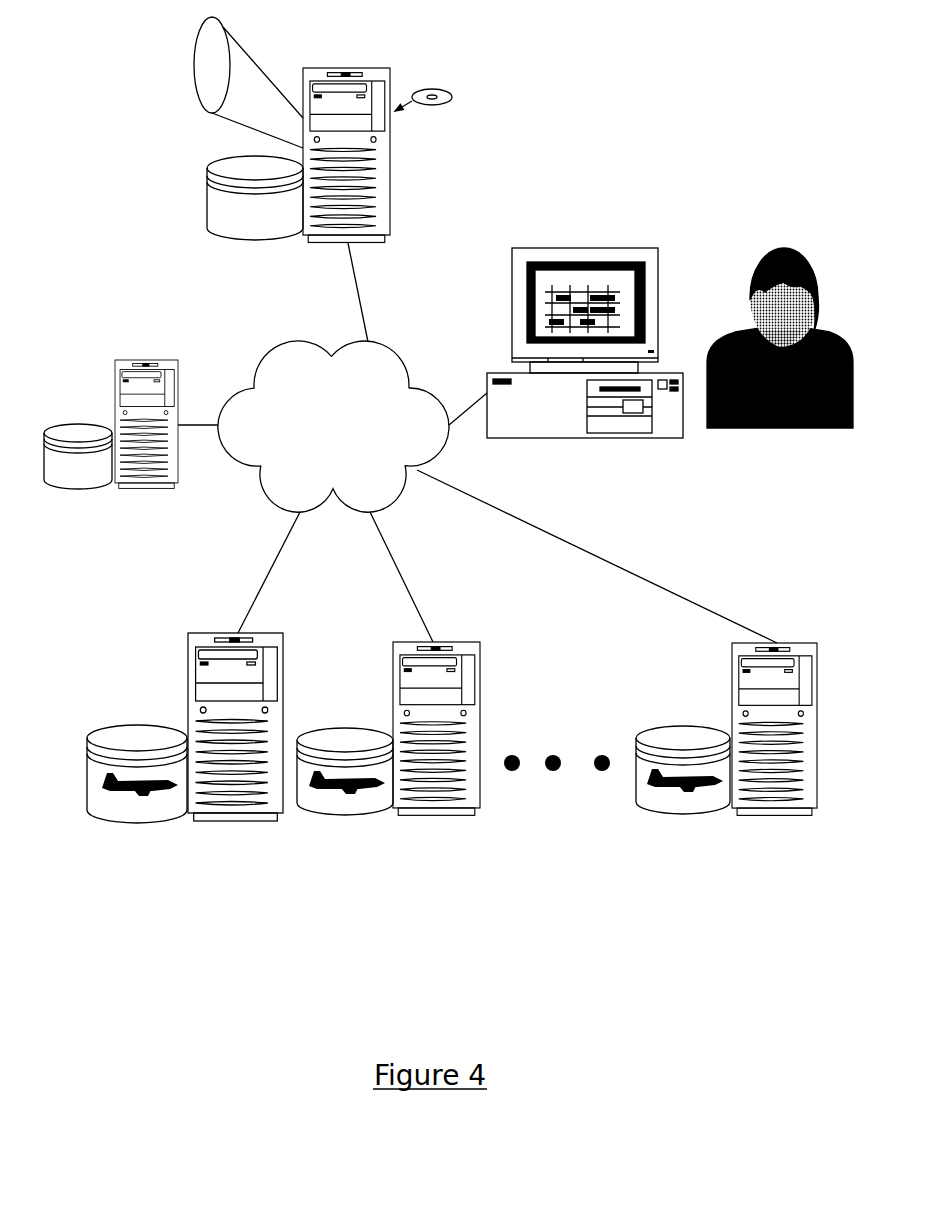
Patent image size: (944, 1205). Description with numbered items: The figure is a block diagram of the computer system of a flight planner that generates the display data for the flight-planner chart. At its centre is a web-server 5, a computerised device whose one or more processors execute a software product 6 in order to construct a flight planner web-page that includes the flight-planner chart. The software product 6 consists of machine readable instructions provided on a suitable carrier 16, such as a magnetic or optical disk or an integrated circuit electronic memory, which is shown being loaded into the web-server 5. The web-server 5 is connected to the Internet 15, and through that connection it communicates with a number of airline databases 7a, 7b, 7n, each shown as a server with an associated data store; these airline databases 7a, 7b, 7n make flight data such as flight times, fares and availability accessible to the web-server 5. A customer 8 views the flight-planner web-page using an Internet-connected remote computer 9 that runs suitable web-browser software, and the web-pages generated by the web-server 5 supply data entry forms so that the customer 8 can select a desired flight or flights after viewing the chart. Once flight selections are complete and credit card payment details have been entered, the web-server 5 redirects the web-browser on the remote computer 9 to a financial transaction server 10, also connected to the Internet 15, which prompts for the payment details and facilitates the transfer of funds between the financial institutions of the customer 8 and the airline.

The web-server 5 is at (393, 213).
The software product 6 is at (201, 81).
The carrier 16 is at (447, 89).
The Internet 15 is at (402, 359).
The remote computer 9 is at (585, 248).
The customer 8 is at (802, 252).
The financial transaction server 10 is at (155, 360).
The airline database 7a is at (188, 725).
The airline database 7b is at (393, 725).
The airline database 7n is at (732, 727).